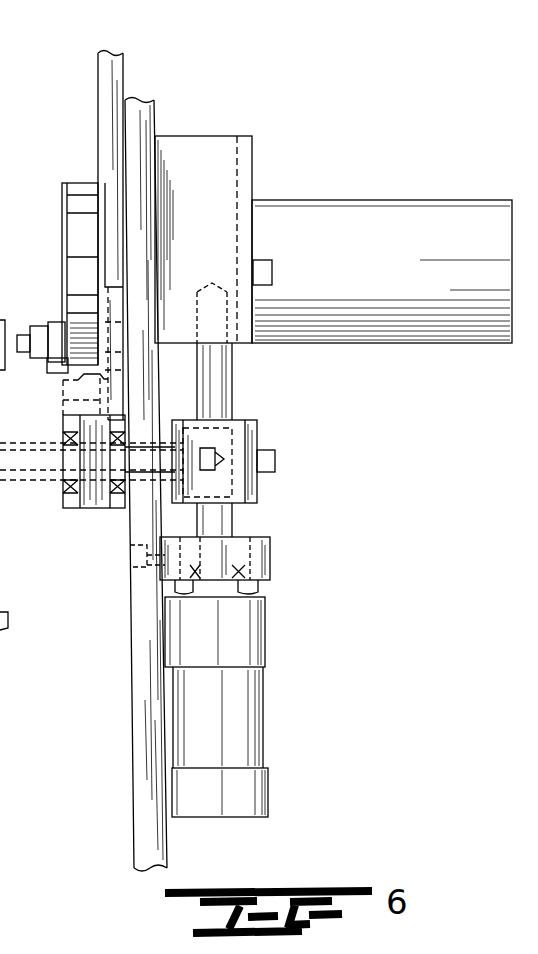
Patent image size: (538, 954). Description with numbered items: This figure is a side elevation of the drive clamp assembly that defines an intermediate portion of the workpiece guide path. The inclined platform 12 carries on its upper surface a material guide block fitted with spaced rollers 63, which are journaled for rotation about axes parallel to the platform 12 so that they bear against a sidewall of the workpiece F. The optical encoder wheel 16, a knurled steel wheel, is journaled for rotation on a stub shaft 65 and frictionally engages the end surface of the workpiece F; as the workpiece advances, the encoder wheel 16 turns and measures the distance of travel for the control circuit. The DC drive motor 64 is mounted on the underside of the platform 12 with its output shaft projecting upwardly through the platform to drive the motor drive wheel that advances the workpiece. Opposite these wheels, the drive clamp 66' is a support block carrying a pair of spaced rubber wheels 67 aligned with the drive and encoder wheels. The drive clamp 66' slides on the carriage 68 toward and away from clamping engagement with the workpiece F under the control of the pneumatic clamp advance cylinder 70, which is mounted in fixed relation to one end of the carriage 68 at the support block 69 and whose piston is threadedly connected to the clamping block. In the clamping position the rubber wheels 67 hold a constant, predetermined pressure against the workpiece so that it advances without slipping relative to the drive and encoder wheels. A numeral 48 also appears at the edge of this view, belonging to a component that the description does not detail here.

The platform 12 is at (133, 660).
The optical encoder wheel 16 is at (78, 183).
The member 48 is at (16, 732).
The spaced rollers 63 is at (48, 372).
The DC drive motor 64 is at (372, 200).
The stub shaft 65 is at (118, 252).
The drive clamp 66' is at (255, 461).
The rubber wheels 67 is at (88, 510).
The carriage 68 is at (232, 518).
The support block 69 is at (253, 146).
The pneumatic clamp advance cylinder 70 is at (263, 731).
The workpiece F is at (82, 384).